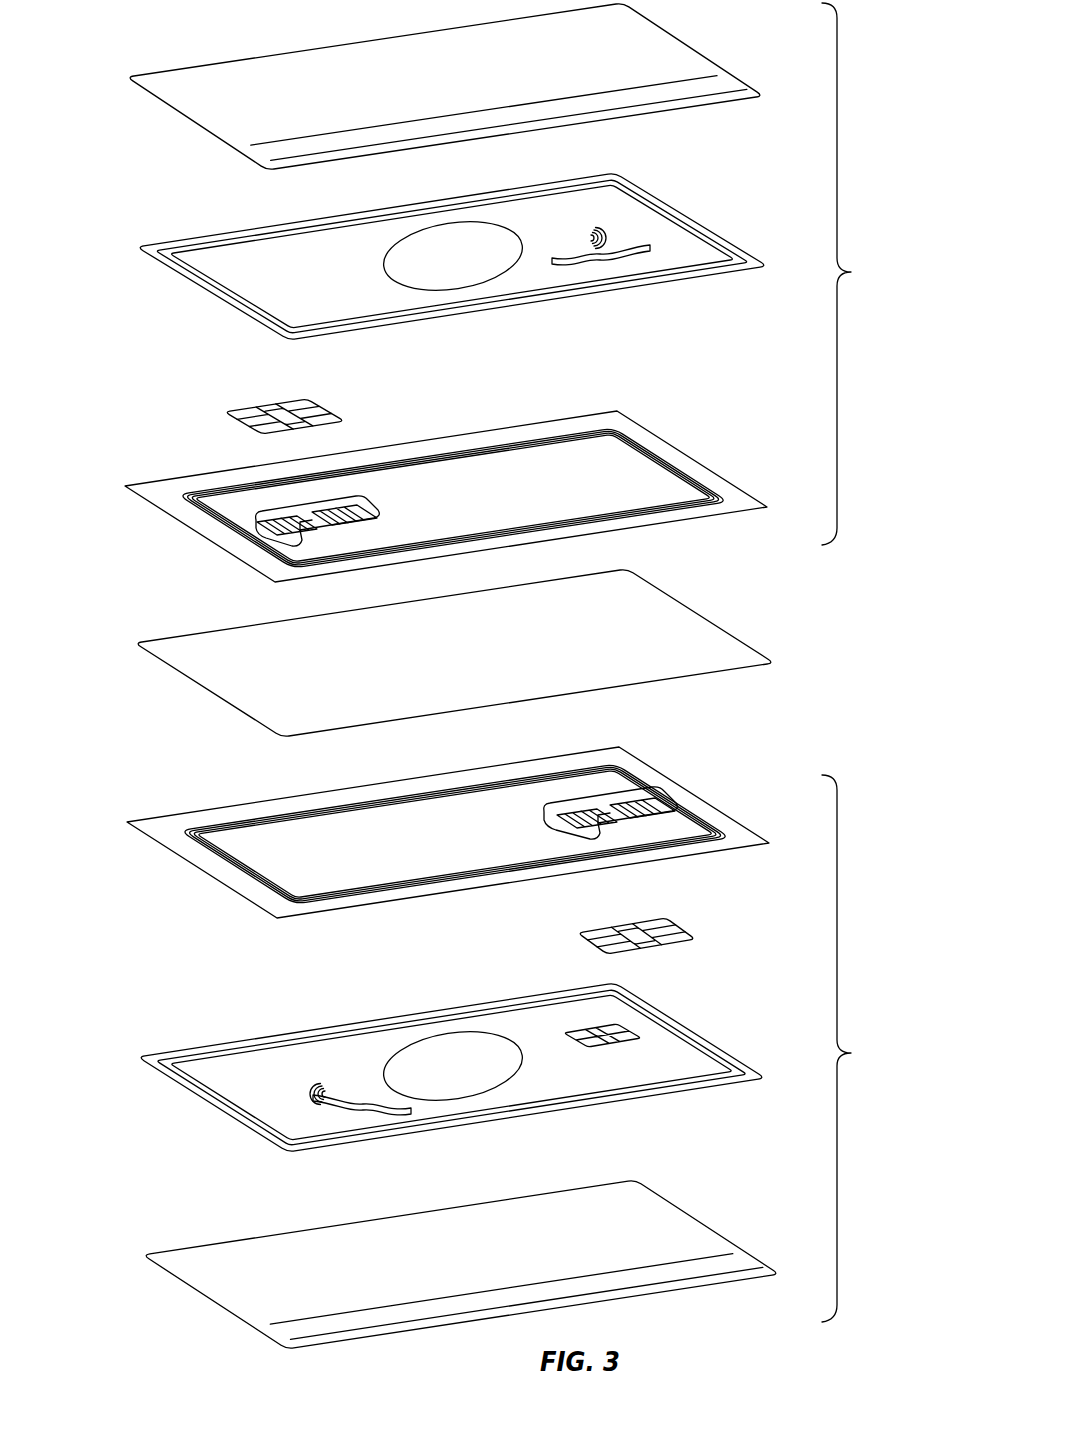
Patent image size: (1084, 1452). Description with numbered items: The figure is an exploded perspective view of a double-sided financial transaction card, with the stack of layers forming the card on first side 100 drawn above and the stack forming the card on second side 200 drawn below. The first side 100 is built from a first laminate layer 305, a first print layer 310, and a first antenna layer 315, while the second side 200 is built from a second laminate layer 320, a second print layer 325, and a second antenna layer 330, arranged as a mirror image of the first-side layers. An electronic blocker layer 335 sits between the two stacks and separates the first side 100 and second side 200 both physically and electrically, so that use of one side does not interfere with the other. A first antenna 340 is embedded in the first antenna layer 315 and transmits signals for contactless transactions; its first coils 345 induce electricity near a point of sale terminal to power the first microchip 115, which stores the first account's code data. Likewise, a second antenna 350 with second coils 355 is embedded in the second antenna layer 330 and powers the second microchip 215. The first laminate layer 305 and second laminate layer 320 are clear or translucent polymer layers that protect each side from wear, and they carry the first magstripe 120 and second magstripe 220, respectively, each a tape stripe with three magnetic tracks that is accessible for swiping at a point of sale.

The first side 100 is at (864, 274).
The second side 200 is at (864, 1048).
The first laminate layer 305 is at (676, 34).
The first magstripe 120 is at (265, 152).
The first print layer 310 is at (688, 215).
The first microchip 115 is at (312, 410).
The first antenna layer 315 is at (442, 485).
The first antenna 340 is at (189, 497).
The first coils 345 is at (266, 525).
The electronic blocker layer 335 is at (700, 613).
The second antenna layer 330 is at (448, 812).
The second antenna 350 is at (190, 830).
The second coils 355 is at (578, 812).
The second microchip 215 is at (582, 936).
The second print layer 325 is at (688, 1026).
The second laminate layer 320 is at (690, 1214).
The second magstripe 220 is at (290, 1328).